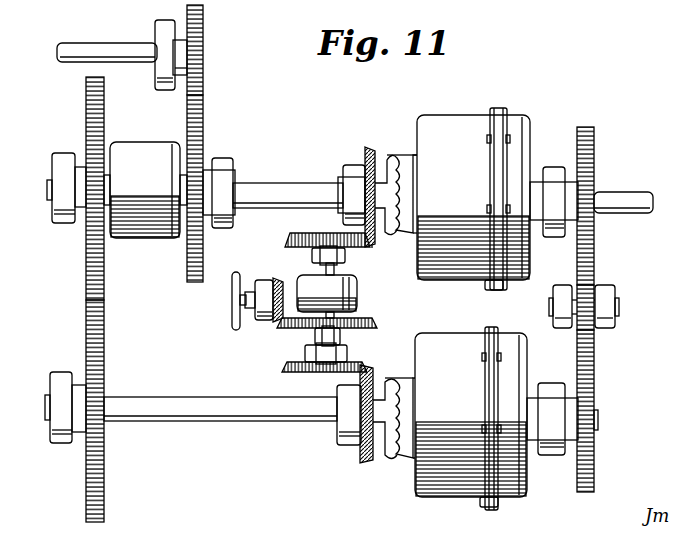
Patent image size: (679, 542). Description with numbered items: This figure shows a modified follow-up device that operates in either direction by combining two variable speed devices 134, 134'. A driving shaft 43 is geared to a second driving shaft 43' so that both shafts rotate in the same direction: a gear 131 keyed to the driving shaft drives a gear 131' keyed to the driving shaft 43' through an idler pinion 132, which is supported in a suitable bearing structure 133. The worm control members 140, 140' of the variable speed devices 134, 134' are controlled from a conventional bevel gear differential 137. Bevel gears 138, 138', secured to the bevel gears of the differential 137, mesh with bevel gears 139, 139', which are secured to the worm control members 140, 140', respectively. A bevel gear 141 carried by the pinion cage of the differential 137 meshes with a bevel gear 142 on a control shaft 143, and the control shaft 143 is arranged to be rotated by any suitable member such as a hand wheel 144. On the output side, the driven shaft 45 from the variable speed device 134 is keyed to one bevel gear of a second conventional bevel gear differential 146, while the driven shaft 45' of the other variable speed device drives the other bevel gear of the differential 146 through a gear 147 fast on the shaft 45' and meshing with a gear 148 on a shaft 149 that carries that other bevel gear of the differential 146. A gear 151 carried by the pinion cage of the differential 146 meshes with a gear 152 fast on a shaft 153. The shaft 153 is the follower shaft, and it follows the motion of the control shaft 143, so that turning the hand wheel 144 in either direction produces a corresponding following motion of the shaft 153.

The follower shaft 153 is at (92, 42).
The gear 152 is at (204, 78).
The gear 151 is at (204, 132).
The gear 148 is at (86, 116).
The gear 147 is at (104, 470).
The shaft 149 is at (48, 188).
The bevel gear differential 146 is at (140, 238).
The driven shaft 45 is at (284, 193).
The bevel gear 139 is at (360, 185).
The worm control member 140 is at (396, 187).
The bevel gear 138 is at (327, 244).
The bevel gear differential 137 is at (358, 296).
The bevel gear 142 is at (282, 280).
The control shaft 143 is at (262, 322).
The hand wheel 144 is at (232, 318).
The bevel gear 141 is at (358, 330).
The bevel gear 138' is at (307, 369).
The bevel gear 139' is at (357, 430).
The driven shaft 45' is at (203, 409).
The worm control member 140' is at (394, 426).
The variable speed device 134 is at (473, 190).
The driving shaft 43 is at (591, 201).
The gear 131 is at (605, 206).
The bearing structure 133 is at (612, 290).
The idler pinion 132 is at (594, 340).
The gear 131' is at (604, 411).
The variable speed device 134' is at (471, 423).
The driving shaft 43' is at (580, 419).